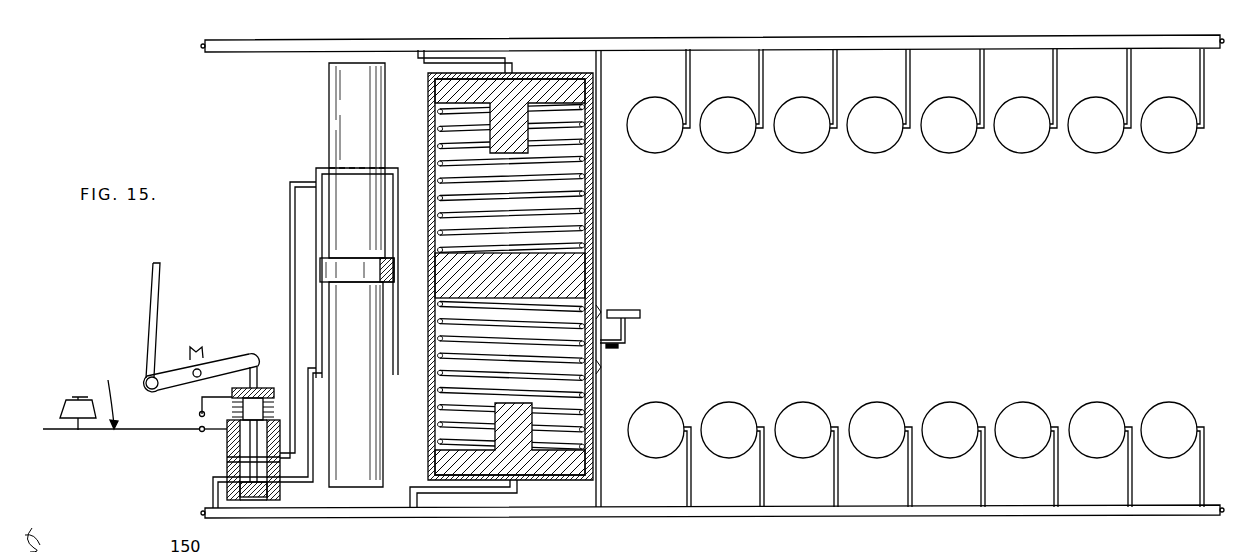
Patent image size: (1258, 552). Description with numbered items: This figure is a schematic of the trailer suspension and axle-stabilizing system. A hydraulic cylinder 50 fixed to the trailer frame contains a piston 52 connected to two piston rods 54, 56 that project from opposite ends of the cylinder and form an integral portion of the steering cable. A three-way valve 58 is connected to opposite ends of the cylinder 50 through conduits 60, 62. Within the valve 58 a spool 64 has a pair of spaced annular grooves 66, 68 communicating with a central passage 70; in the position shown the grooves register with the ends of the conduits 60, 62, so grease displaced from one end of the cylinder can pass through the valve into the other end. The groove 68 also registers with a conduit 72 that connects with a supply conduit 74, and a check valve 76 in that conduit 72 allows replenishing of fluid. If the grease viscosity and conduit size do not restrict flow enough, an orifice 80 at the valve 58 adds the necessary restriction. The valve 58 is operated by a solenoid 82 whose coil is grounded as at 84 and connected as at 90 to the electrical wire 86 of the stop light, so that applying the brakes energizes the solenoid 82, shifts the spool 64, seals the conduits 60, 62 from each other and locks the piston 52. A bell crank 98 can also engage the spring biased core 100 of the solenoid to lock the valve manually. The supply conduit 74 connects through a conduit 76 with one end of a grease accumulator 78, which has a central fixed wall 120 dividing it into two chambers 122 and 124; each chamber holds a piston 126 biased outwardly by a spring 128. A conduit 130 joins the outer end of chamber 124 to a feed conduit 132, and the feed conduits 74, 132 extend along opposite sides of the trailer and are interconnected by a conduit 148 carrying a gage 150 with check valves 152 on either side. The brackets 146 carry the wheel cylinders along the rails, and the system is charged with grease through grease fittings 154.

The hydraulic cylinder 50 is at (398, 370).
The piston 52 is at (375, 267).
The piston rod 54 is at (360, 139).
The piston rod 56 is at (362, 447).
The three-way valve 58 is at (227, 442).
The conduit 60 is at (290, 291).
The conduit 62 is at (312, 484).
The spool 64 is at (258, 497).
The annular groove 66 is at (236, 460).
The annular groove 68 is at (246, 497).
The central passage 70 is at (227, 470).
The conduit 72 is at (213, 490).
The supply conduit 74 is at (356, 512).
The conduit 76 is at (492, 490).
The grease accumulator 78 is at (420, 273).
The orifice 80 is at (280, 480).
The solenoid 82 is at (284, 384).
The ground connection 84 is at (121, 407).
The electrical wire 86 is at (158, 418).
The connection 90 is at (200, 412).
The bell crank 98 is at (247, 356).
The spring biased core 100 is at (250, 378).
The central fixed wall 120 is at (575, 270).
The chamber 122 is at (585, 400).
The chamber 124 is at (582, 200).
The piston 126 is at (510, 277).
The spring 128 is at (582, 162).
The conduit 130 is at (512, 66).
The feed conduit 132 is at (633, 47).
The lamp bracket 146 is at (691, 84).
The conduit 148 is at (602, 290).
The gage 150 is at (641, 314).
The check valves 152 is at (603, 312).
The grease fittings 154 is at (203, 46).